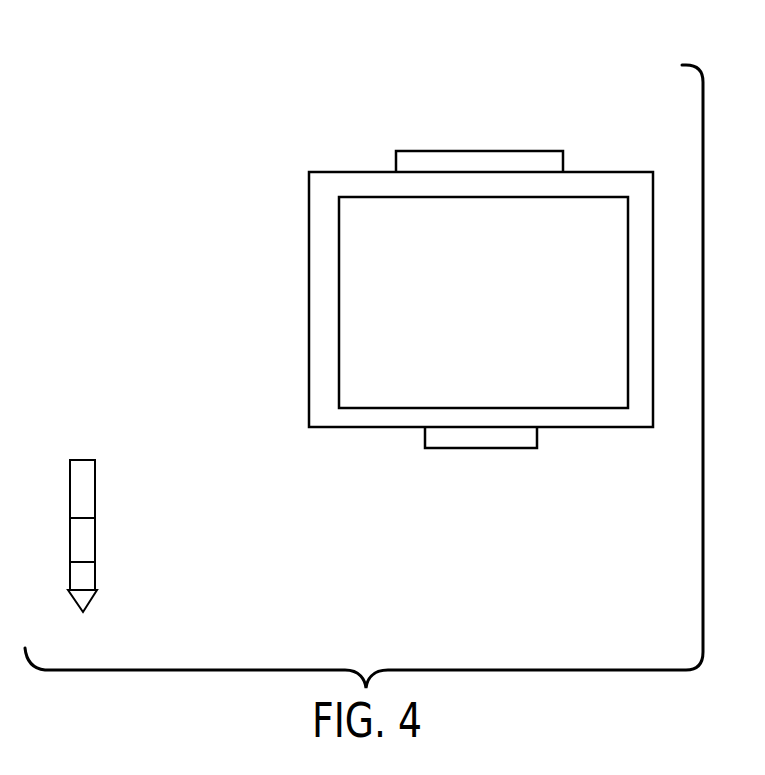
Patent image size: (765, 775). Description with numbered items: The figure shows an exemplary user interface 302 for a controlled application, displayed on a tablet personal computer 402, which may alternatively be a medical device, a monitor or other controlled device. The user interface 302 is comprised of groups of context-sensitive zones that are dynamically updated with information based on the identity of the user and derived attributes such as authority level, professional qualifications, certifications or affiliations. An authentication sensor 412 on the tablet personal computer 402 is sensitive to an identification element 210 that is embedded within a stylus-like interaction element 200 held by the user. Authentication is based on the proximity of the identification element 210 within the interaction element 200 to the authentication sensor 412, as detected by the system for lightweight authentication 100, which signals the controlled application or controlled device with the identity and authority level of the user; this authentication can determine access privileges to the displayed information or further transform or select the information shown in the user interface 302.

The system for lightweight authentication 100 is at (478, 448).
The interaction element 200 is at (87, 465).
The identification element 210 is at (84, 598).
The user interface 302 is at (382, 393).
The tablet personal computer 402 is at (608, 427).
The authentication sensor 412 is at (488, 150).